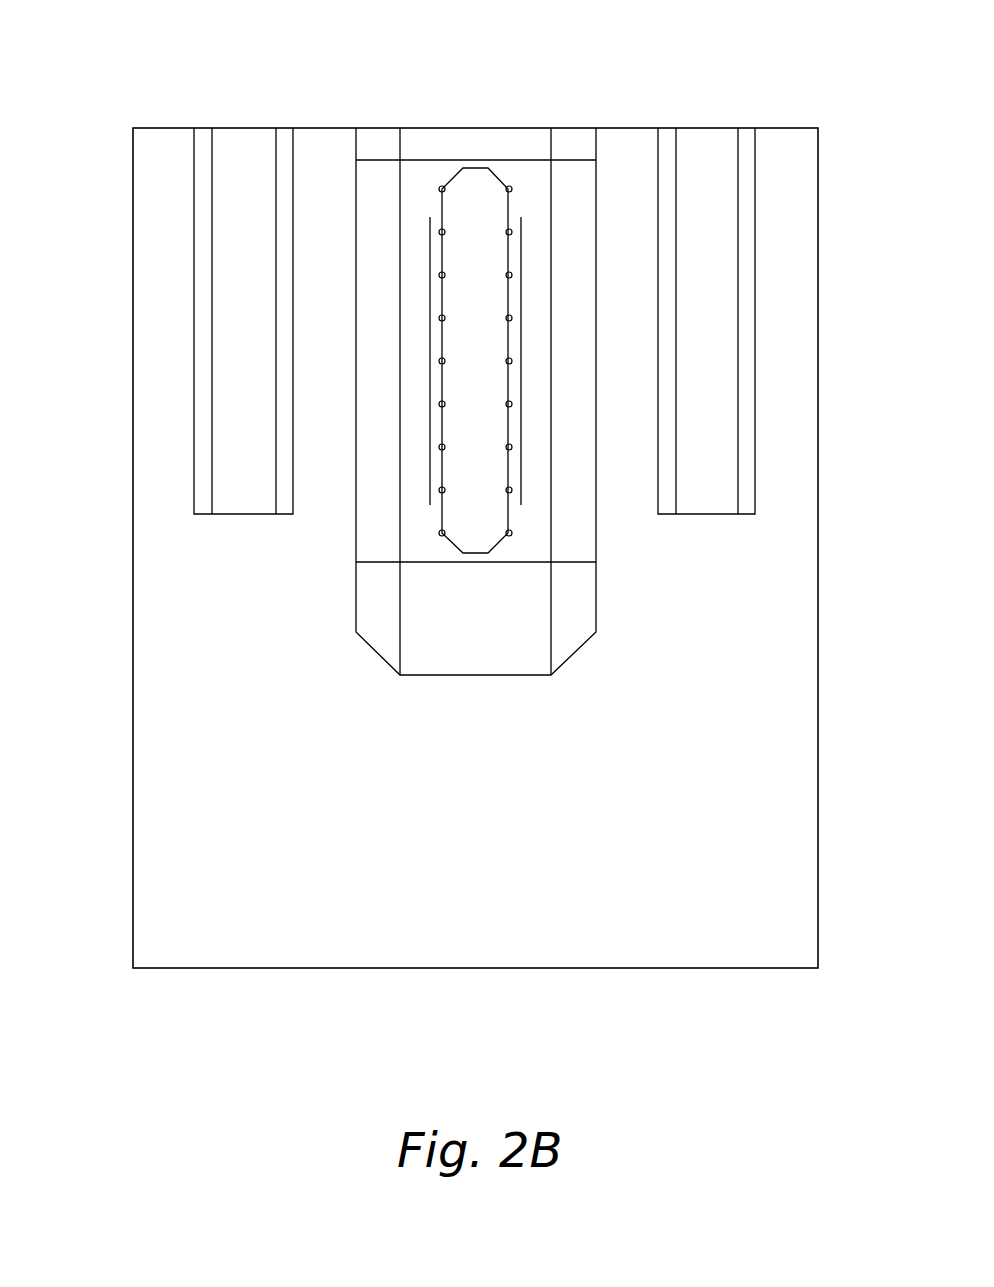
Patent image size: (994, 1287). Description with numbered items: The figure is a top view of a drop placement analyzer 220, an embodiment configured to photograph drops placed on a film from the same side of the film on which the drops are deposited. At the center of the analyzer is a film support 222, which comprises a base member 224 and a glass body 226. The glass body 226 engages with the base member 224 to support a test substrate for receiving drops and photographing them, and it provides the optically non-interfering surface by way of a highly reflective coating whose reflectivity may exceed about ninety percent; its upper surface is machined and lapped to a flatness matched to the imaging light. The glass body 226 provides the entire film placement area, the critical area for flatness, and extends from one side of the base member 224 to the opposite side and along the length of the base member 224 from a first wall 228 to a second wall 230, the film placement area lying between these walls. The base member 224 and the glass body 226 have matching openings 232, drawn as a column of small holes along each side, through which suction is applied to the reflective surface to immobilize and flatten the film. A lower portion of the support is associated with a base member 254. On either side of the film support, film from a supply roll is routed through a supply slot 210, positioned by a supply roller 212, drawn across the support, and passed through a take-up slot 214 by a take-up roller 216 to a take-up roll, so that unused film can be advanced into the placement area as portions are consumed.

The drop placement analyzer 220 is at (148, 38).
The supply slot 210 is at (756, 271).
The supply roller 212 is at (705, 128).
The take-up slot 214 is at (194, 271).
The take-up roller 216 is at (245, 514).
The film support 222 is at (460, 676).
The base member 224 is at (597, 271).
The glass body 226 is at (552, 198).
The first wall 228 is at (528, 159).
The second wall 230 is at (375, 562).
The openings 232 is at (473, 167).
The base member 254 is at (598, 578).